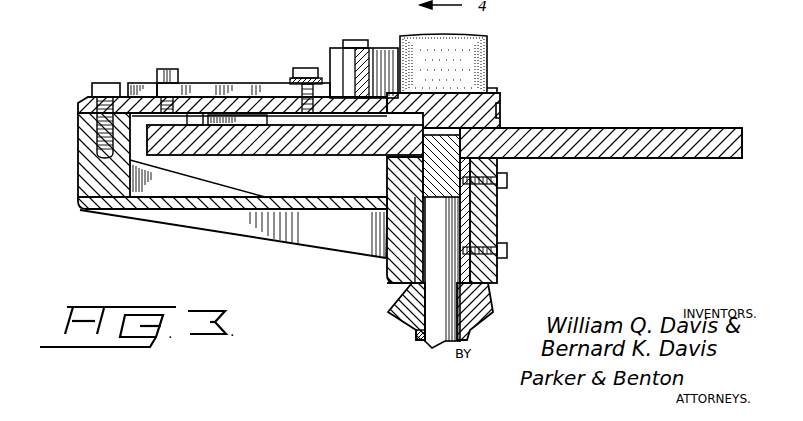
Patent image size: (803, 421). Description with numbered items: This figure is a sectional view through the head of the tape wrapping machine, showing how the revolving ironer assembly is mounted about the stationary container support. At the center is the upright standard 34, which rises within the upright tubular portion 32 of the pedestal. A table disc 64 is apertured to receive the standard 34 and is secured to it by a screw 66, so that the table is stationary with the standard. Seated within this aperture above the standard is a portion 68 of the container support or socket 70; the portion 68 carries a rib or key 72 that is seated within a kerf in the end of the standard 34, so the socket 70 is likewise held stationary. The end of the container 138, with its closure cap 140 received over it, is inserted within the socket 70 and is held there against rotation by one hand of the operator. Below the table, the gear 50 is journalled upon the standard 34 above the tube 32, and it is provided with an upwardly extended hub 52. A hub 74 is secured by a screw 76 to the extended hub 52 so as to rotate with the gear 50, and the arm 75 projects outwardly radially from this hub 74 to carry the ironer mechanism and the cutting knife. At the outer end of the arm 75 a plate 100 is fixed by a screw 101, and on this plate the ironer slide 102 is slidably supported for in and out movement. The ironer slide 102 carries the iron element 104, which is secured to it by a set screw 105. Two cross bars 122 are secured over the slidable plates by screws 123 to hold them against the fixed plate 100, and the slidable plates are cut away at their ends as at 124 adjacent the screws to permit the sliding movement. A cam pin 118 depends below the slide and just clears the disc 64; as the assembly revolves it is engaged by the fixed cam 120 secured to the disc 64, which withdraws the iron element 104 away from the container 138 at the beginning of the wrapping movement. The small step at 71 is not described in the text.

The upright tubular portion 32 is at (415, 333).
The upright standard 34 is at (429, 345).
The gear 50 is at (400, 302).
The extended hub 52 is at (463, 224).
The table disc 64 is at (696, 130).
The screw 66 is at (509, 181).
The portion of container support 68 is at (455, 136).
The container support or socket 70 is at (500, 95).
The step 71 is at (500, 110).
The rib or key 72 is at (413, 165).
The hub 74 is at (500, 232).
The arm 75 is at (228, 222).
The screw 76 is at (509, 251).
The plate 100 is at (78, 105).
The screw 101 is at (100, 82).
The ironer slide 102 is at (331, 91).
The iron element 104 is at (382, 50).
The set screw 105 is at (346, 43).
The cam pin 118 is at (197, 122).
The fixed cam 120 is at (255, 122).
The cross bar 122 is at (180, 78).
The screw 123 is at (172, 70).
The cut-away end 124 is at (137, 85).
The container 138 is at (487, 41).
The closure cap 140 is at (490, 76).